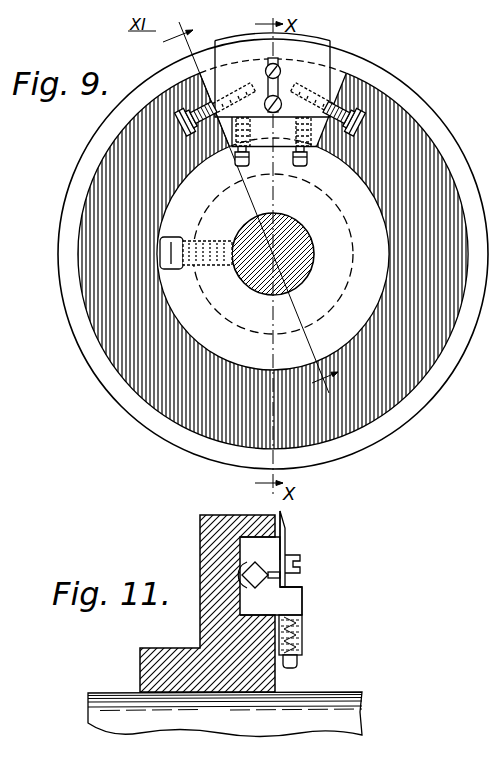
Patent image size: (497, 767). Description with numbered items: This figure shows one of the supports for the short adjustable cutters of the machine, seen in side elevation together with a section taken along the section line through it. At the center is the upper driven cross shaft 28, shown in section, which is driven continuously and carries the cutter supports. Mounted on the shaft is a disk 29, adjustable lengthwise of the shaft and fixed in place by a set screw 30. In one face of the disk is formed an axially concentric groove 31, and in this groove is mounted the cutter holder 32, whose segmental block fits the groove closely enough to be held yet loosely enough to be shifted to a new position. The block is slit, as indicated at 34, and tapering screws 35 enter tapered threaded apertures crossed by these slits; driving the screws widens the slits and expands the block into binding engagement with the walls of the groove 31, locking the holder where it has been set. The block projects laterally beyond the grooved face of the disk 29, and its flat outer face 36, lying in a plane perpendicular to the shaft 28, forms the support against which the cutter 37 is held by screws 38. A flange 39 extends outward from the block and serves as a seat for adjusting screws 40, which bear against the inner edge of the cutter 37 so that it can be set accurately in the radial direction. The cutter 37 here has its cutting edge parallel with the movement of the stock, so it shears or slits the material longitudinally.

In FIG. 9, the upper driven cross shaft 28 is at (298, 258).
In FIG. 11, the upper driven cross shaft 28 is at (338, 722).
In FIG. 9, the disk 29 is at (60, 198).
In FIG. 11, the disk 29 is at (170, 649).
In FIG. 9, the set screw 30 is at (196, 235).
In FIG. 9, the axially concentric groove 31 is at (118, 355).
In FIG. 11, the axially concentric groove 31 is at (244, 515).
In FIG. 9, the cutter holder 32 is at (331, 83).
In FIG. 11, the cutter holder 32 is at (247, 550).
In FIG. 9, the slit 34 is at (214, 92).
In FIG. 11, the slit 34 is at (275, 599).
In FIG. 9, the tapering screw 35 is at (200, 100).
In FIG. 11, the tapering screw 35 is at (257, 570).
In FIG. 11, the outer face 36 is at (282, 547).
In FIG. 9, the cutter 37 is at (323, 42).
In FIG. 11, the cutter 37 is at (287, 537).
In FIG. 9, the screw 38 is at (281, 72).
In FIG. 11, the screw 38 is at (301, 557).
In FIG. 9, the flange 39 is at (274, 132).
In FIG. 11, the flange 39 is at (295, 598).
In FIG. 9, the adjusting screw 40 is at (237, 163).
In FIG. 11, the adjusting screw 40 is at (302, 647).